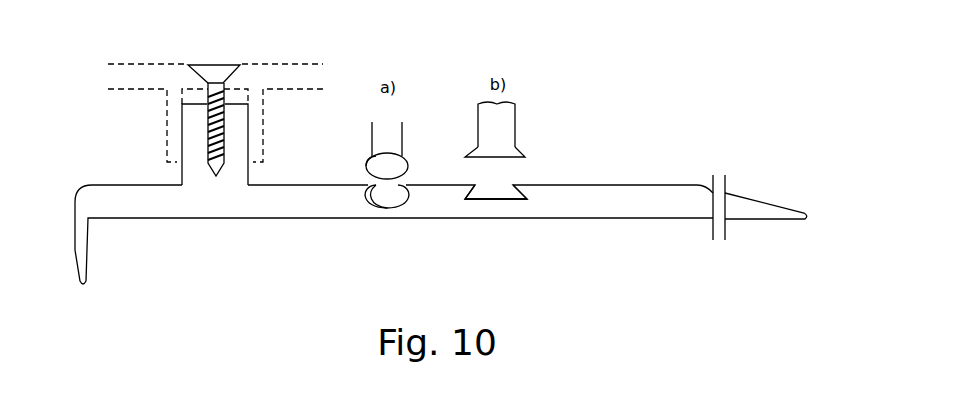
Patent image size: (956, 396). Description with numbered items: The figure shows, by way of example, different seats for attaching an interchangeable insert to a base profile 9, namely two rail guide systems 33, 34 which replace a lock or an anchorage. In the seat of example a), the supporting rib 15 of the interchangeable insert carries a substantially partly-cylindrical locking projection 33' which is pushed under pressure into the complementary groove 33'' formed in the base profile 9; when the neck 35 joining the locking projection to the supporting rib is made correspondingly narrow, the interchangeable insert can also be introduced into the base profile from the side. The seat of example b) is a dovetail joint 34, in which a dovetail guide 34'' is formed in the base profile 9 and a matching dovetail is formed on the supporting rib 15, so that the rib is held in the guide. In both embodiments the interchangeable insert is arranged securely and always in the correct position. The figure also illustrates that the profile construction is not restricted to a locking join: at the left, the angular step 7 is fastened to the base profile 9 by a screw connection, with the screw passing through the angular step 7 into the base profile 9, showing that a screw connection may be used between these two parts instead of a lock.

The angular step 7 is at (268, 76).
The base profile 9 is at (305, 222).
The supporting rib 15 is at (392, 131).
The rail guide system 33 is at (360, 229).
The locking projection 33' is at (417, 154).
The complementary groove 33'' is at (395, 232).
The dovetail joint 34 is at (531, 202).
The dovetail guide 34'' is at (496, 241).
The neck 35 is at (366, 166).